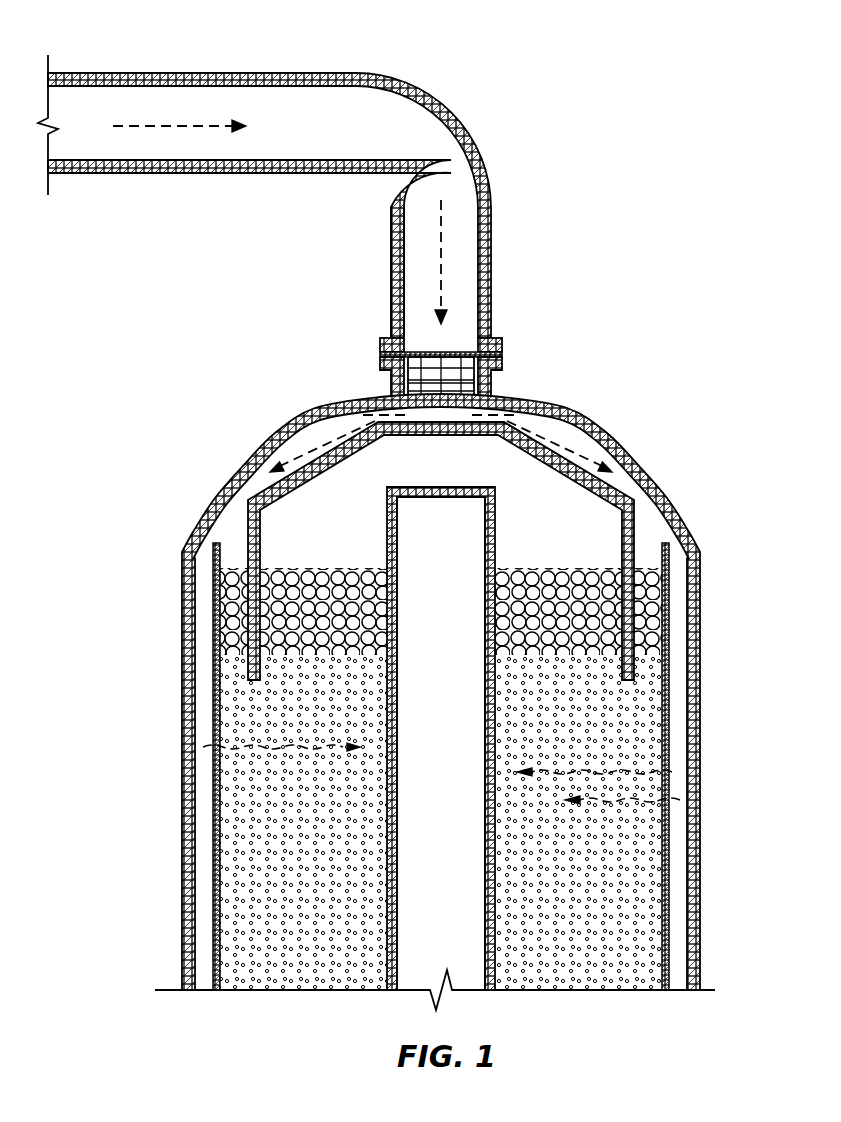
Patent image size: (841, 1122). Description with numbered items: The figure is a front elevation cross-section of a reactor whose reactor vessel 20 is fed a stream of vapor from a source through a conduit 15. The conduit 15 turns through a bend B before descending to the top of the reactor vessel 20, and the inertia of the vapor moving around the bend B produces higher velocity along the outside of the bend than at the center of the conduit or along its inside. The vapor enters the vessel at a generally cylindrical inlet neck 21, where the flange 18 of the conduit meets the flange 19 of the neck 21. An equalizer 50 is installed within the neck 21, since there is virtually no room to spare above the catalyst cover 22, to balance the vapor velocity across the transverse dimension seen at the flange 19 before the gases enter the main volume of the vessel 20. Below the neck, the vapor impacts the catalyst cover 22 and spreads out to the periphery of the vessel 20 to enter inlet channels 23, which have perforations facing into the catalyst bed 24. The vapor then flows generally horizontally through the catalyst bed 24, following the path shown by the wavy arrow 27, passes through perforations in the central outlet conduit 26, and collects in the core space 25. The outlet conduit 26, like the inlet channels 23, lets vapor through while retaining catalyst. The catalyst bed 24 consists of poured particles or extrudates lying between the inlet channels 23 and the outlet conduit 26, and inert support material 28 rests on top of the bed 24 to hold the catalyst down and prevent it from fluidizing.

The conduit 15 is at (265, 73).
The bend B is at (418, 172).
The flange of the conduit 18 is at (496, 338).
The flange of the generally cylindrical neck 19 is at (502, 370).
The inlet neck 21 is at (390, 380).
The equalizer 50 is at (417, 354).
The reactor vessel 20 is at (577, 406).
The catalyst cover 22 is at (580, 462).
The inlet channels 23 is at (205, 643).
The catalyst bed 24 is at (270, 770).
The core space 25 is at (452, 769).
The outlet conduit 26 is at (497, 850).
The wavy arrow 27 is at (283, 748).
The inert support material 28 is at (598, 572).